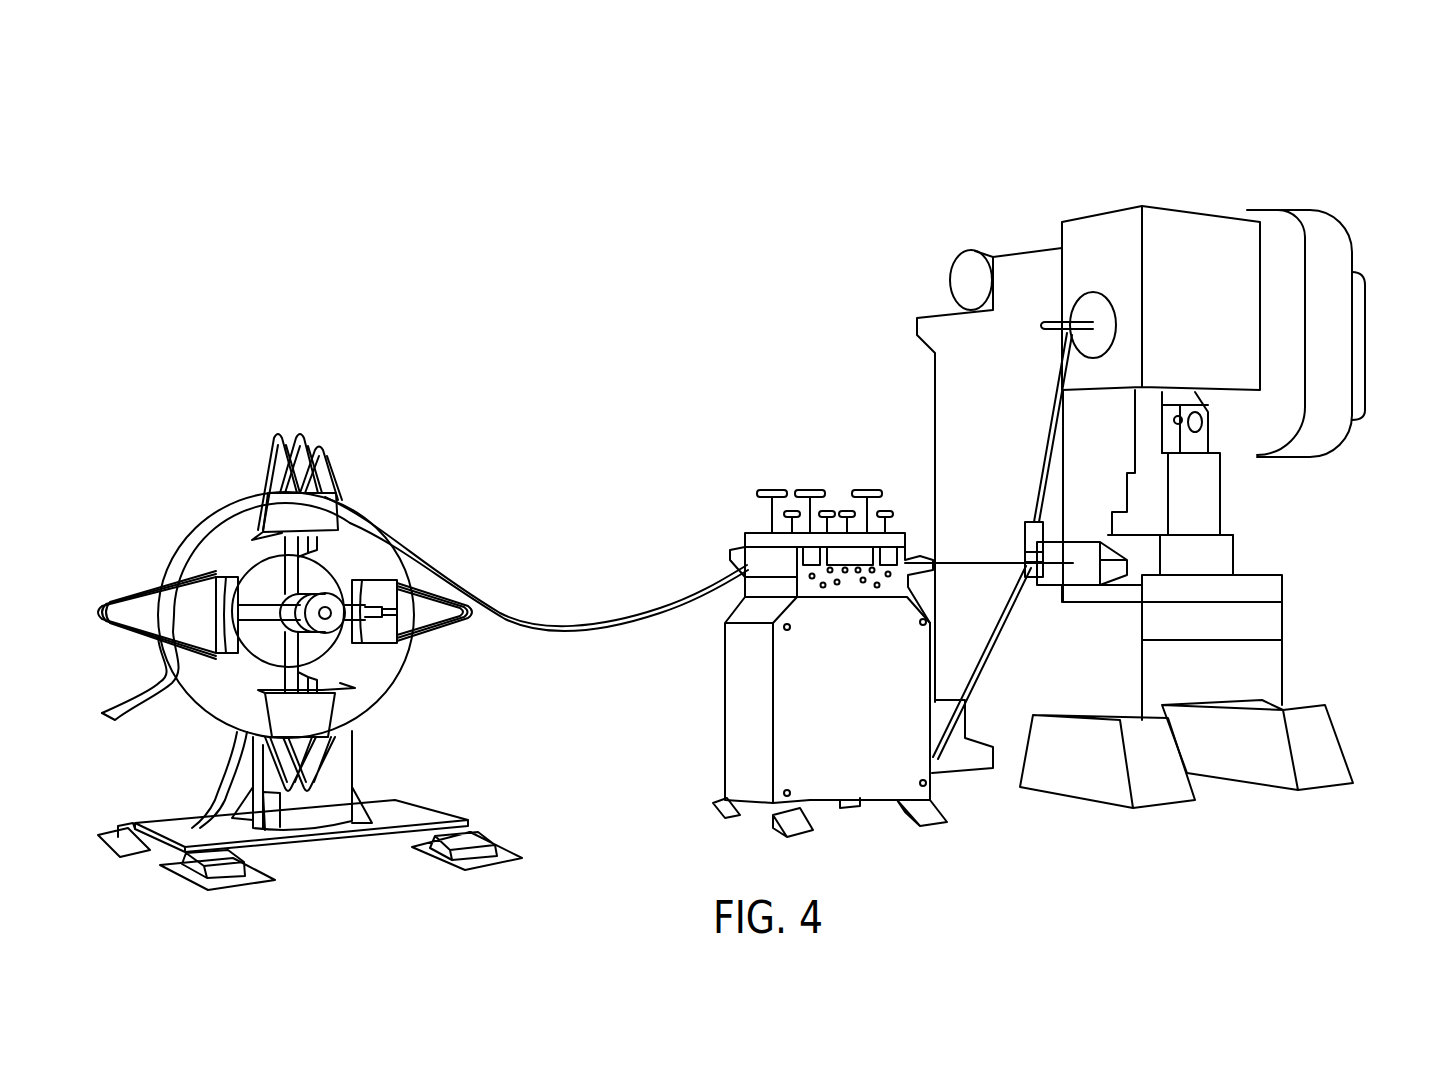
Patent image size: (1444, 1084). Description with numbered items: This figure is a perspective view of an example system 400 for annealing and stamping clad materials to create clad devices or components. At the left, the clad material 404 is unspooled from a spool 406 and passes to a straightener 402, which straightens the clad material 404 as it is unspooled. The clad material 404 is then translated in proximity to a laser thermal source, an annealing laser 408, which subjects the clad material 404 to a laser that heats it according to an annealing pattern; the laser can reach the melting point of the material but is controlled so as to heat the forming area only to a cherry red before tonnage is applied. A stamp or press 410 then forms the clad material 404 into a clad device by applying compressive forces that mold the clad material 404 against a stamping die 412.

The system 400 is at (1372, 142).
The straightener 402 is at (781, 475).
The clad material 404 is at (650, 594).
The spool 406 is at (176, 485).
The annealing laser 408 is at (1017, 511).
The press 410 is at (1374, 269).
The stamping die 412 is at (1268, 556).